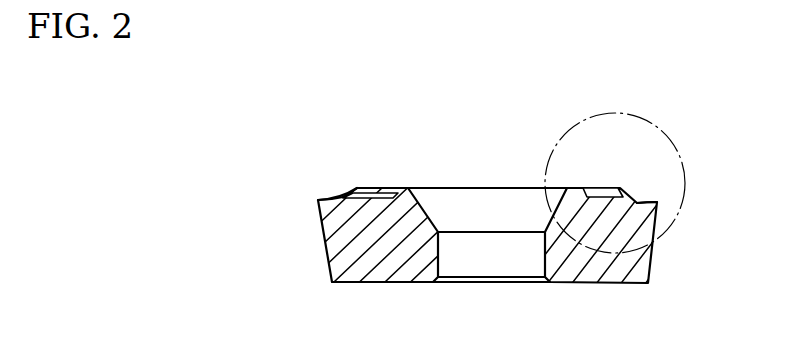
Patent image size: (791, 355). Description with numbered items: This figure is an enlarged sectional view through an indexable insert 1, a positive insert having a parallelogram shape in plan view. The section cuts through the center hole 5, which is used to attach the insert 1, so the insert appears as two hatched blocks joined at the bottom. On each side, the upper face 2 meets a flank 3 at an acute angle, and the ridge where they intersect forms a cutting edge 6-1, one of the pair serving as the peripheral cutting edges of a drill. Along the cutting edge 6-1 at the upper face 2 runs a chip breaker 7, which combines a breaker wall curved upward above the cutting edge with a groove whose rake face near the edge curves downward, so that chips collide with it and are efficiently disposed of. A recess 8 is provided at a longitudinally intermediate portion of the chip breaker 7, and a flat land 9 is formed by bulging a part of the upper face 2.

The indexable insert 1 is at (459, 169).
The upper face 2 is at (370, 188).
The flank 3 is at (323, 250).
The center hole 5 is at (443, 217).
The cutting edge 6-1 is at (765, 196).
The chip breaker 7 is at (331, 184).
The recess 8 is at (603, 191).
The flat land 9 is at (403, 188).